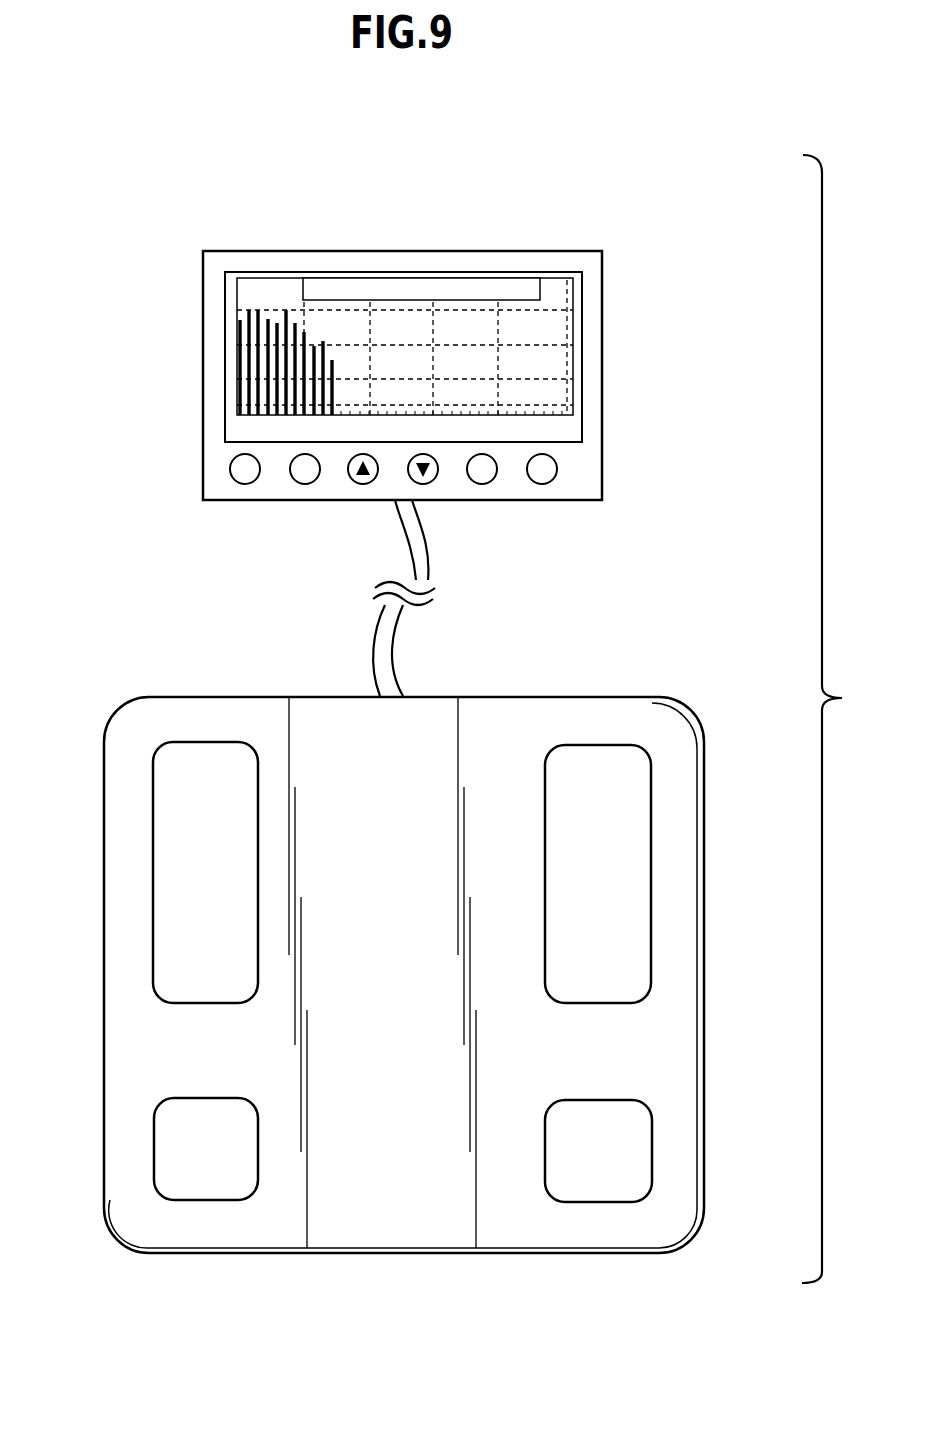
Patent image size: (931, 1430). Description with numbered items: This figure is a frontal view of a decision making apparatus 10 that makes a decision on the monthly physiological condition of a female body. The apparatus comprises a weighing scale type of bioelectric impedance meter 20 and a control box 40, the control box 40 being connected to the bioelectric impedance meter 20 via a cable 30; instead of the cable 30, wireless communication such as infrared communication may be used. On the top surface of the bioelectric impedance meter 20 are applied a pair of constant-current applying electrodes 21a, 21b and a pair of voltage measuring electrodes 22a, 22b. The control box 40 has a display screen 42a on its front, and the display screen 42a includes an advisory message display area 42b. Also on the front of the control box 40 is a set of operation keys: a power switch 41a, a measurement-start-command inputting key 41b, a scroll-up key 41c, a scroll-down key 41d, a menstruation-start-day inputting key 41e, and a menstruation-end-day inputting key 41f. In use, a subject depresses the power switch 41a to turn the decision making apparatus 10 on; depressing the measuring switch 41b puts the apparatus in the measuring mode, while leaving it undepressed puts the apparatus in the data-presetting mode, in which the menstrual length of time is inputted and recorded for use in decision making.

The decision making apparatus 10 is at (848, 698).
The bioelectric impedance meter 20 is at (707, 938).
The constant-current applying electrode 21a is at (180, 758).
The constant-current applying electrode 21b is at (610, 773).
The voltage measuring electrode 22a is at (203, 1180).
The voltage measuring electrode 22b is at (623, 1188).
The cable 30 is at (382, 637).
The control box 40 is at (622, 250).
The power switch 41a is at (240, 470).
The measurement-start-command inputting key 41b is at (304, 481).
The scroll-up key 41c is at (363, 481).
The scroll-down key 41d is at (423, 481).
The menstruation-start-day inputting key 41e is at (493, 480).
The menstruation-end-day inputting key 41f is at (542, 481).
The display screen 42a is at (517, 343).
The advisory message display area 42b is at (430, 295).